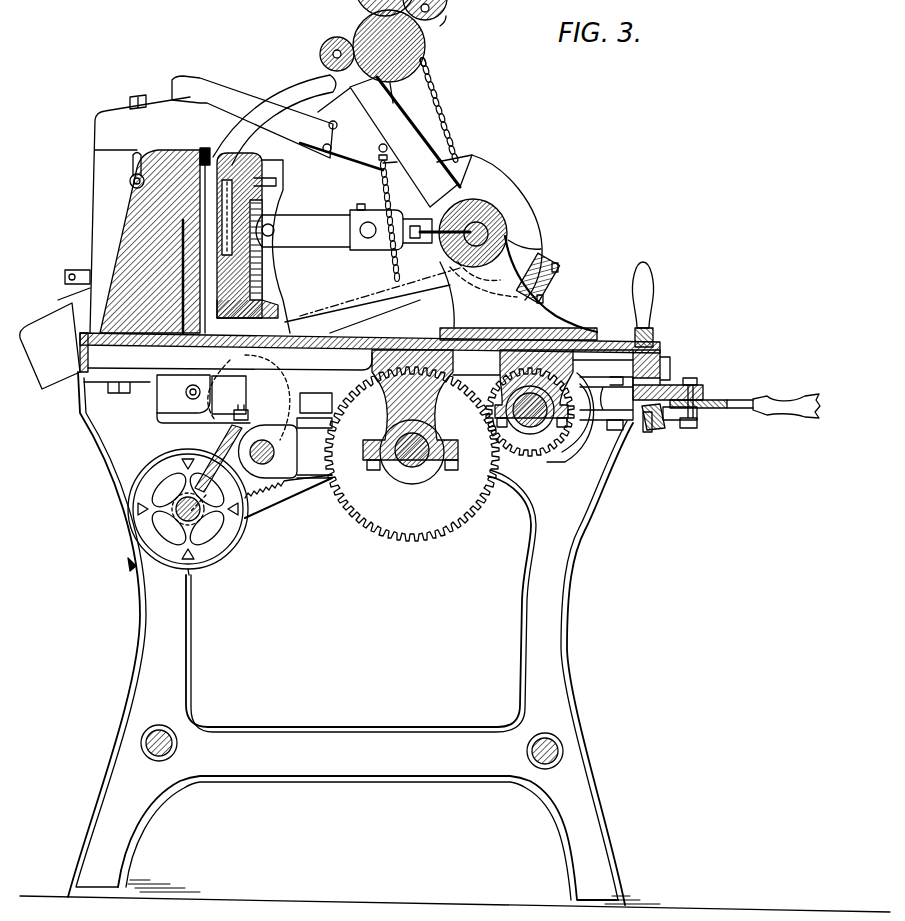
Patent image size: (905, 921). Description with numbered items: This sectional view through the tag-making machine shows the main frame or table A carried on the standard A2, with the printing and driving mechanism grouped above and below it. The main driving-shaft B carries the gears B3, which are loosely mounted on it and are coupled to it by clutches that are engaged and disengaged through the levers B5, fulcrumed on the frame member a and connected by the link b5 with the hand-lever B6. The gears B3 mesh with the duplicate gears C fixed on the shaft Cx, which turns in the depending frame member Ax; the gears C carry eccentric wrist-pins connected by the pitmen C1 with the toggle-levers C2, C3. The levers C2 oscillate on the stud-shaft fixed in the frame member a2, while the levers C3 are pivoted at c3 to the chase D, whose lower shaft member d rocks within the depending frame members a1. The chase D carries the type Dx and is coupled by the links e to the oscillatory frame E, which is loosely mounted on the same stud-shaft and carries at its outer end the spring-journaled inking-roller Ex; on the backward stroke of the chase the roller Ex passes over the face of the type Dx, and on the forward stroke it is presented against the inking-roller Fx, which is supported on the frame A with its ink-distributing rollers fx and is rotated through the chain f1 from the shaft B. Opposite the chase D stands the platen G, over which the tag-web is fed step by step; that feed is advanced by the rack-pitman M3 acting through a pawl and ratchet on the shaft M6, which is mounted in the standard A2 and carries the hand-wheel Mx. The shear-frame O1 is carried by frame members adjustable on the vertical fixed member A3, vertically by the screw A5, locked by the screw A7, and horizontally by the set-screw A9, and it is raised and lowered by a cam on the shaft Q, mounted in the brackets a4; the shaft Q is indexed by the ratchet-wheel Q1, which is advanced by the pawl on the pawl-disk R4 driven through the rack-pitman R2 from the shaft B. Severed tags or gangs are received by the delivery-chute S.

The main frame or table A is at (144, 345).
The standard A2 is at (492, 229).
The vertical fixed frame member A3 is at (140, 215).
The screw A5 is at (130, 104).
The screw A7 is at (130, 181).
The set-screw A9 is at (78, 272).
The frame member Ax is at (393, 404).
The main driving-shaft B is at (500, 380).
The duplicate gears B3 is at (547, 464).
The clutch levers B5 is at (610, 424).
The hand-lever B6 is at (792, 402).
The duplicate gears C is at (412, 454).
The shaft Cx is at (438, 410).
The pitmen C1 is at (365, 278).
The toggle-lever C2 is at (436, 234).
The toggle-lever C3 is at (329, 227).
The pivotal connection c3 is at (276, 226).
The chase D is at (268, 272).
The type Dx is at (212, 222).
The oscillatory frame E is at (563, 248).
The inking-roller Ex is at (320, 53).
The inking-roller Fx is at (366, 22).
The ink-distributing rollers fx is at (442, 26).
The chain f1 is at (442, 108).
The platen G is at (210, 250).
The rack-pitman M3 is at (276, 506).
The shaft M6 is at (188, 509).
The hand-wheel Mx is at (226, 562).
The shear-frame O1 is at (183, 421).
The shaft Q is at (193, 389).
The ratchet-wheel Q1 is at (222, 389).
The rack-pitman R2 is at (249, 415).
The pawl-disk R4 is at (226, 416).
The delivery-chute S is at (55, 338).
The frame member a is at (676, 392).
The depending frame members a1 is at (314, 410).
The frame member a2 is at (518, 259).
The brackets a4 is at (183, 394).
The link b5 is at (670, 434).
The lower shaft member d is at (276, 455).
The links e is at (367, 309).